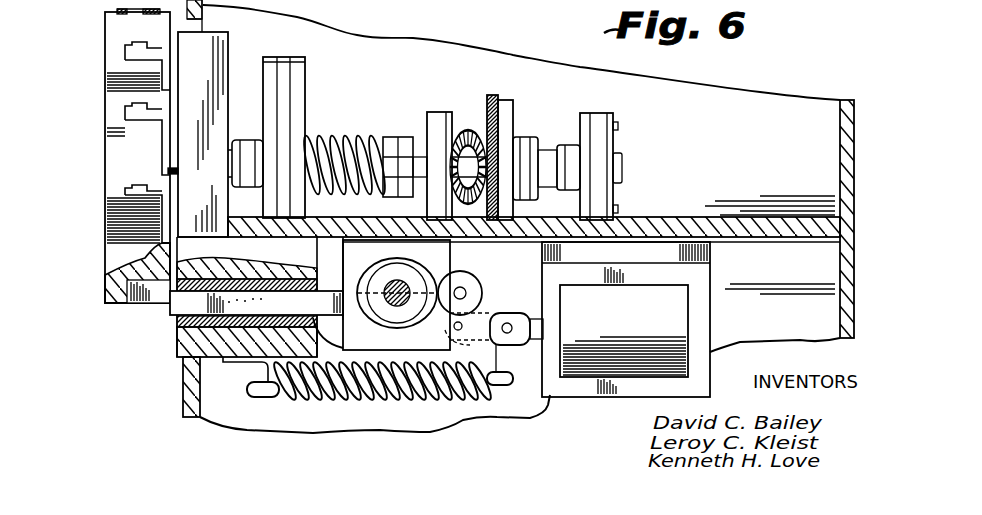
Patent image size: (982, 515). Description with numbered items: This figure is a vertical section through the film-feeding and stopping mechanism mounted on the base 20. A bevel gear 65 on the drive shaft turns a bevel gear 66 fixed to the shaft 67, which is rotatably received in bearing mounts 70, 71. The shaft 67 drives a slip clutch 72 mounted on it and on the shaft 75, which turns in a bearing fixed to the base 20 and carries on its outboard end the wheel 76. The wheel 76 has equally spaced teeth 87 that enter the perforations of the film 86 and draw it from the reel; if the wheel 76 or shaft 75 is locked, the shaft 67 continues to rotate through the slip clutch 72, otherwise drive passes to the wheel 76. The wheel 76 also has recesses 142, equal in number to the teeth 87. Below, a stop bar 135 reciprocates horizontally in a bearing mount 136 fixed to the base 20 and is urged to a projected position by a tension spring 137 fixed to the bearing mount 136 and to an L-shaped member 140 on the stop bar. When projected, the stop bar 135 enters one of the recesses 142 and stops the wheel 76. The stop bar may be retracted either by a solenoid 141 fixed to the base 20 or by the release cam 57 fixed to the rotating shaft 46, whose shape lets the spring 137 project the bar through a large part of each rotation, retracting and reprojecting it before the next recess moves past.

The base 20 is at (650, 232).
The shaft 46 is at (402, 283).
The release cam 57 is at (456, 275).
The bevel gear 65 is at (468, 160).
The bevel gear 66 is at (502, 102).
The shaft 67 is at (506, 128).
The bearing mount 70 is at (597, 123).
The bearing mount 71 is at (437, 112).
The slip clutch 72 is at (308, 96).
The shaft 75 is at (232, 148).
The wheel 76 is at (118, 155).
The film 86 is at (118, 11).
The teeth 87 is at (143, 13).
The stop bar 135 is at (203, 308).
The bearing mount 136 is at (197, 362).
The tension spring 137 is at (403, 395).
The L-shaped member 140 is at (507, 388).
The solenoid 141 is at (672, 348).
The recesses 142 is at (177, 172).